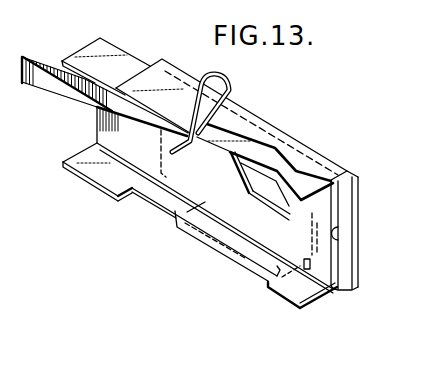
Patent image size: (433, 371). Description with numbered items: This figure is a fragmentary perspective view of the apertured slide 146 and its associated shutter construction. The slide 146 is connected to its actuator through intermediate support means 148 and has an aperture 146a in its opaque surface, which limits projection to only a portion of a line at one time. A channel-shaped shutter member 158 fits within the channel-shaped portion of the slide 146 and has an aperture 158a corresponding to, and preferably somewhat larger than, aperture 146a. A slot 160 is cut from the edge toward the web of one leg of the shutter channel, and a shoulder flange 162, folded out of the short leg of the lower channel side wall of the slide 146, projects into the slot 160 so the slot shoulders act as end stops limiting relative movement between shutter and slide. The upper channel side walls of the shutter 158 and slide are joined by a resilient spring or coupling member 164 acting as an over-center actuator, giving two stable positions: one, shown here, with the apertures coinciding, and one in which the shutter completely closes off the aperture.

The apertured slide 146 is at (407, 166).
The aperture 146a is at (234, 171).
The intermediate support means 148 is at (35, 62).
The shutter member 158 is at (341, 238).
The aperture 158a is at (262, 208).
The slot 160 is at (152, 200).
The shoulder flange 162 is at (242, 257).
The resilient spring or coupling member 164 is at (228, 89).